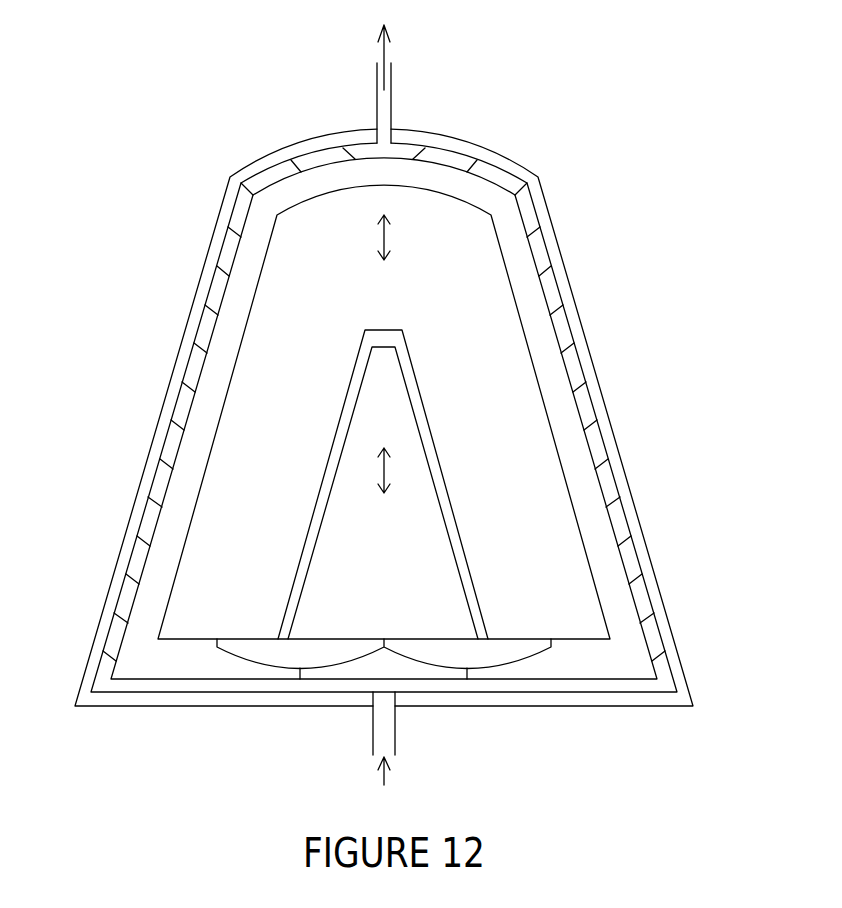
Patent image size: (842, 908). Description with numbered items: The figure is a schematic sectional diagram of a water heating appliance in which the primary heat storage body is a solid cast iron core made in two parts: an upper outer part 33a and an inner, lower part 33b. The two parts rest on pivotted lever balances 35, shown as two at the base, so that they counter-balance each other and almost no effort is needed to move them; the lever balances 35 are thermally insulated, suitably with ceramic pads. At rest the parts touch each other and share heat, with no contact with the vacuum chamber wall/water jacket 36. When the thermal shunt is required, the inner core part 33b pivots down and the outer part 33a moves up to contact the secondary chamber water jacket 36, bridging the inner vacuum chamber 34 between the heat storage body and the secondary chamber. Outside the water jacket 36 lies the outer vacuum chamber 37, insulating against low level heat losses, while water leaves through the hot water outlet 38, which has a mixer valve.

The upper outer part 33a is at (545, 493).
The inner lower part 33b is at (412, 458).
The inner vacuum chamber 34 is at (608, 540).
The lever balances 35 is at (255, 668).
The secondary chamber water jacket 36 is at (613, 415).
The outer vacuum chamber 37 is at (652, 572).
The hot water outlet 38 is at (392, 105).